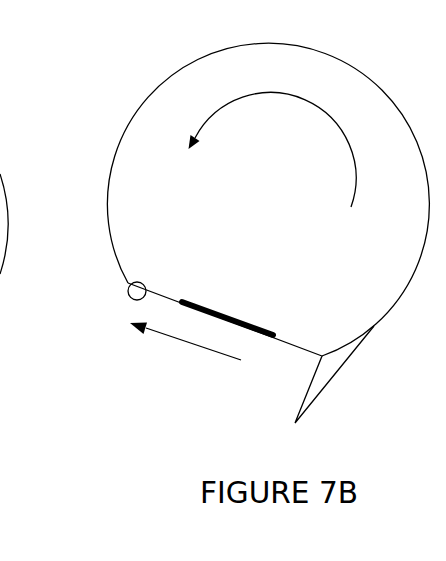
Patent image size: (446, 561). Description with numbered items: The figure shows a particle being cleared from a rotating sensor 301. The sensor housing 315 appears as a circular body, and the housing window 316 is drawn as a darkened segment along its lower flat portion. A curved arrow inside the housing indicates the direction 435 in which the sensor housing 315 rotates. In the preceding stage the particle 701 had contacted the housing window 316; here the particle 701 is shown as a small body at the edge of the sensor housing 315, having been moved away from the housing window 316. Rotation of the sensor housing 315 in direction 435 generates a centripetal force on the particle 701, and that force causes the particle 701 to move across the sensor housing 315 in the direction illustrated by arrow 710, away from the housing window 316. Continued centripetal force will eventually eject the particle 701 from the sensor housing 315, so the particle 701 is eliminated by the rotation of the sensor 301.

The sensor 301 is at (218, 218).
The sensor housing 315 is at (172, 72).
The direction of rotation 435 is at (351, 207).
The housing window 316 is at (235, 317).
The particle 701 is at (128, 290).
The arrow 710 is at (170, 337).